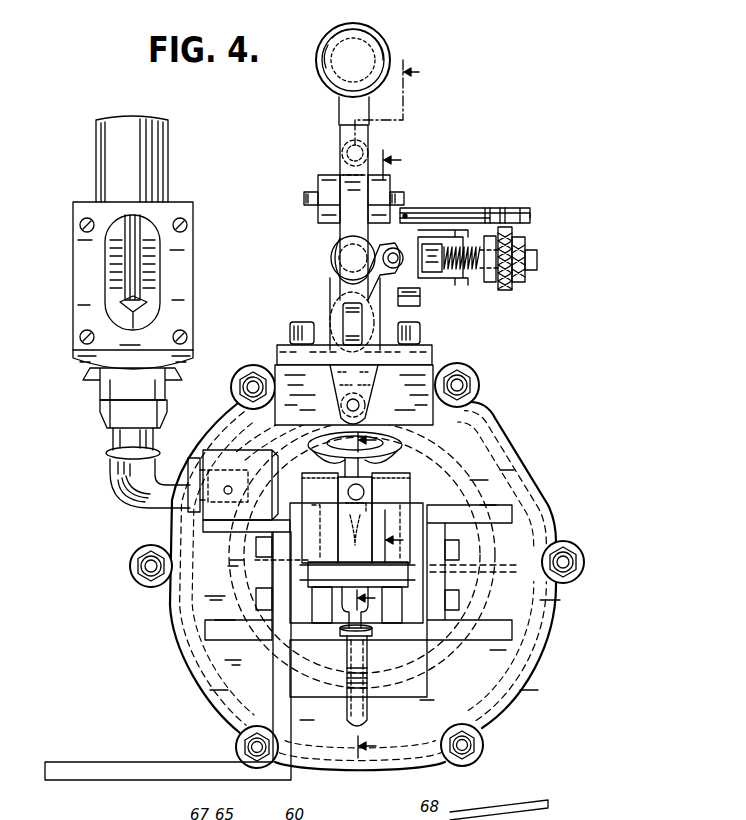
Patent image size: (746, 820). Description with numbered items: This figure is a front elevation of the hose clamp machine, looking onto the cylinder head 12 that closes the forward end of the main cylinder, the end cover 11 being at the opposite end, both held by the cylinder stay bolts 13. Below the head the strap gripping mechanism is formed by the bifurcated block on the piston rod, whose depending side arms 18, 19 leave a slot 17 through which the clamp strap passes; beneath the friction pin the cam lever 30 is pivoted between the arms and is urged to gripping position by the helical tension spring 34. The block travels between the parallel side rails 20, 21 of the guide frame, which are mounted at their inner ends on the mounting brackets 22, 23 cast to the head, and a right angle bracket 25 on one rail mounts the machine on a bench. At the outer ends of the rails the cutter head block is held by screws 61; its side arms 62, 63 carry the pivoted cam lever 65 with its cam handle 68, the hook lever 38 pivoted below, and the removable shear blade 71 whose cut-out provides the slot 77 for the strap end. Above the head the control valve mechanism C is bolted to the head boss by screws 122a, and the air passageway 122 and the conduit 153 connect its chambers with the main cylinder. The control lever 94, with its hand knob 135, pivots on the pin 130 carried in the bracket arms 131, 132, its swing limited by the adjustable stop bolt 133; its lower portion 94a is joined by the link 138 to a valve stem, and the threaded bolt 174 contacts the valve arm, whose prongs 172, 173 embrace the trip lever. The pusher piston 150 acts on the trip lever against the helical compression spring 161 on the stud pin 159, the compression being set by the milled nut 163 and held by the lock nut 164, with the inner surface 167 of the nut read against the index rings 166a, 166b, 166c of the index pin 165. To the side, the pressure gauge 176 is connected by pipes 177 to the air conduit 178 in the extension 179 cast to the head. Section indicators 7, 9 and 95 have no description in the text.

The cylinder head 12 is at (482, 664).
The cylinder stay bolts 13 is at (243, 387).
The section line 7 is at (359, 595).
The section line 9 is at (382, 331).
The end cover 11 is at (397, 356).
The slot 17 is at (367, 626).
The depending side arm 18 is at (324, 622).
The depending side arm 19 is at (394, 622).
The side rail 20 is at (290, 538).
The side rail 21 is at (428, 512).
The mounting bracket 22 is at (262, 583).
The mounting bracket 23 is at (468, 566).
The right angle bracket 25 is at (118, 758).
The cam lever 30 is at (349, 716).
The helical tension spring 34 is at (366, 629).
The hook lever 38 is at (355, 530).
The screws 61 is at (256, 555).
The side arm 62 is at (303, 480).
The side arm 63 is at (404, 476).
The cam lever 65 is at (340, 493).
The cam handle 68 is at (330, 465).
The shear blade 71 is at (320, 575).
The slot 77 is at (340, 565).
The control lever 94 is at (344, 185).
The lower portion of control lever 94a is at (368, 392).
The pivot 95 is at (338, 262).
The air passageway 122 is at (300, 352).
The screws 122a is at (292, 333).
The pivot pin 130 is at (306, 203).
The bracket arm 131 is at (325, 190).
The bracket arm 132 is at (390, 184).
The adjustable stop bolt 133 is at (343, 145).
The hand knob 135 is at (323, 70).
The link 138 is at (348, 318).
The pusher piston 150 is at (416, 306).
The conduit 153 is at (420, 352).
The stud pin 159 is at (478, 280).
The helical compression spring 161 is at (466, 272).
The milled nut 163 is at (510, 282).
The lock nut 164 is at (527, 276).
The index pin 165 is at (445, 212).
The inner index ring 166a is at (490, 208).
The index ring 166b is at (506, 212).
The outermost index ring 166c is at (531, 213).
The inner surface of nut 167 is at (492, 282).
The prong 172 is at (450, 238).
The prong 173 is at (434, 272).
The threaded bolt 174 is at (386, 250).
The pressure gauge 176 is at (74, 270).
The pipes 177 is at (120, 482).
The air conduit 178 is at (225, 490).
The extension 179 is at (222, 460).
The control valve mechanism C is at (428, 175).